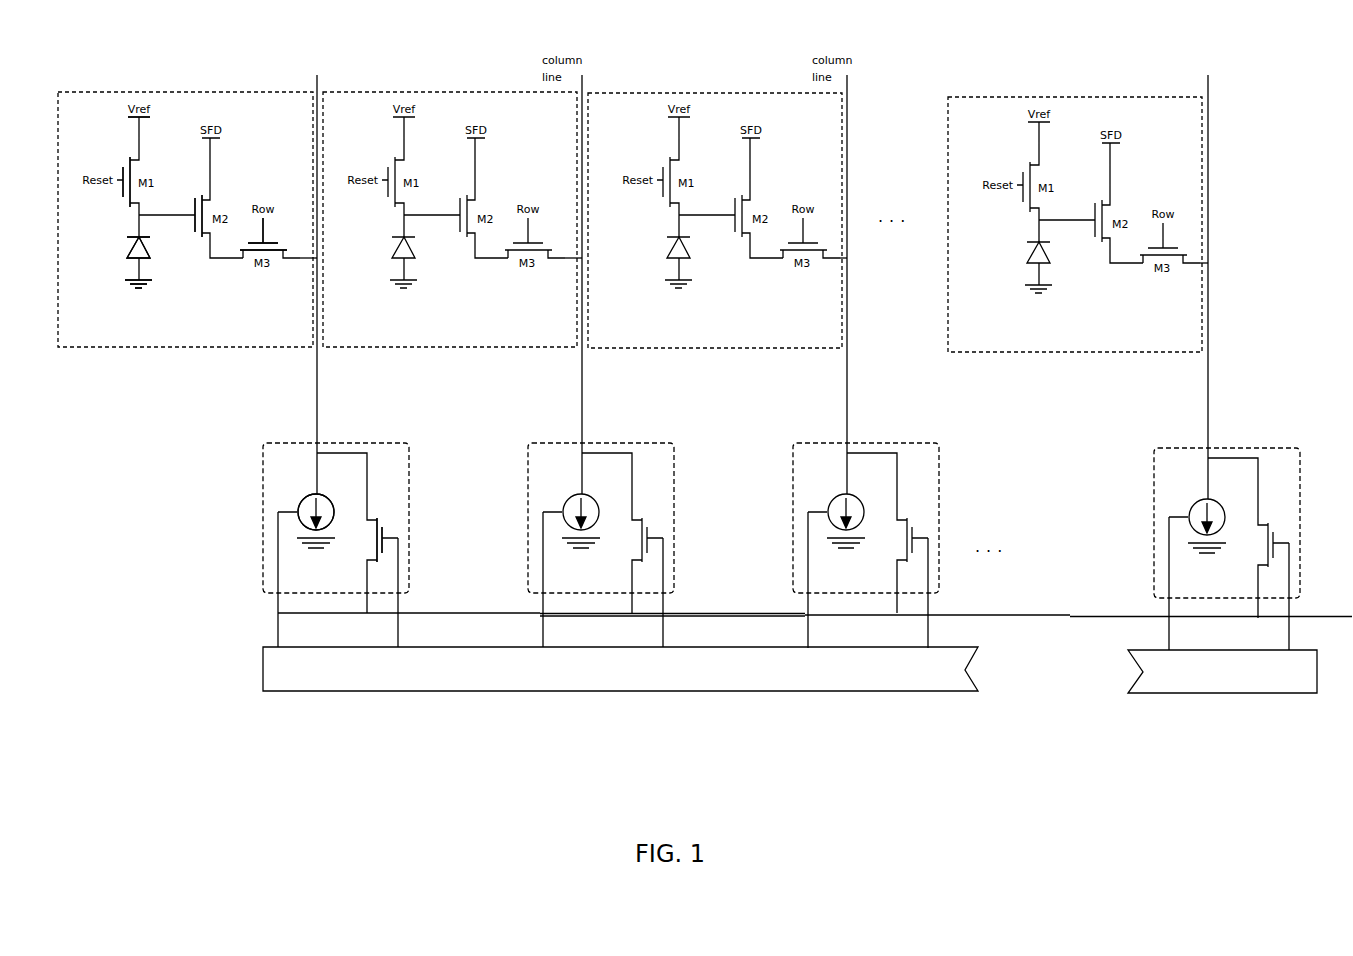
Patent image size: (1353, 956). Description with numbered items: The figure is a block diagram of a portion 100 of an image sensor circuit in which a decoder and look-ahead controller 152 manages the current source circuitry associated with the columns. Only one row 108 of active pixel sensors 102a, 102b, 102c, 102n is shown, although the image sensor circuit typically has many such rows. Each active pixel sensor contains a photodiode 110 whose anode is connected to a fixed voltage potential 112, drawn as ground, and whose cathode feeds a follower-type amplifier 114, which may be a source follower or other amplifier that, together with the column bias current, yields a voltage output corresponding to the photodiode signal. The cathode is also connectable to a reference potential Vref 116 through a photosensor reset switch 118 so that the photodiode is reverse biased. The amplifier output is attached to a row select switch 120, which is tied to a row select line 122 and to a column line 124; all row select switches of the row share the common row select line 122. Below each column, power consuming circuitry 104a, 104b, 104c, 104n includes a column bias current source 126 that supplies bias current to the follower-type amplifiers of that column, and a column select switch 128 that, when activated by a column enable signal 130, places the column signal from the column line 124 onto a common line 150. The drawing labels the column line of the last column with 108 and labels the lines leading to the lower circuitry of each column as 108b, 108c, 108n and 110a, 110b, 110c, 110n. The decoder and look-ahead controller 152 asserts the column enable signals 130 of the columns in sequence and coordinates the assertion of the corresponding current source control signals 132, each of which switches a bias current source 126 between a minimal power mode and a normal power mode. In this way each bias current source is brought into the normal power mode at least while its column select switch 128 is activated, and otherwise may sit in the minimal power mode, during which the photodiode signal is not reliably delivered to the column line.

The image sensor circuit portion 100 is at (178, 434).
The active pixel sensor 102a is at (187, 219).
The active pixel sensor 102b is at (452, 219).
The active pixel sensor 102c is at (717, 220).
The active pixel sensor 102n is at (1078, 224).
The power consuming circuitry 104a is at (336, 519).
The power consuming circuitry 104b is at (601, 536).
The power consuming circuitry 104c is at (866, 537).
The power consuming circuitry 104n is at (1227, 540).
The row 108 is at (1222, 139).
The current source line 108b is at (541, 604).
The current source line 108c is at (806, 604).
The current source line 108n is at (1168, 604).
The photodiode 110 is at (125, 250).
The control line 110a is at (400, 603).
The control line 110b is at (668, 603).
The control line 110c is at (933, 603).
The control line 110n is at (1292, 603).
The fixed voltage potential 112 is at (138, 290).
The follower-type amplifier 114 is at (212, 207).
The reference potential Vref 116 is at (161, 111).
The photosensor reset switch 118 is at (145, 166).
The row select switch 120 is at (258, 268).
The row select line 122 is at (263, 197).
The column line 124 is at (355, 75).
The column bias current source 126 is at (308, 493).
The column select switch 128 is at (383, 516).
The column enable signal 130 is at (400, 629).
The current source control signal 132 is at (278, 604).
The common line 150 is at (1075, 618).
The decoder and look-ahead controller 152 is at (790, 670).